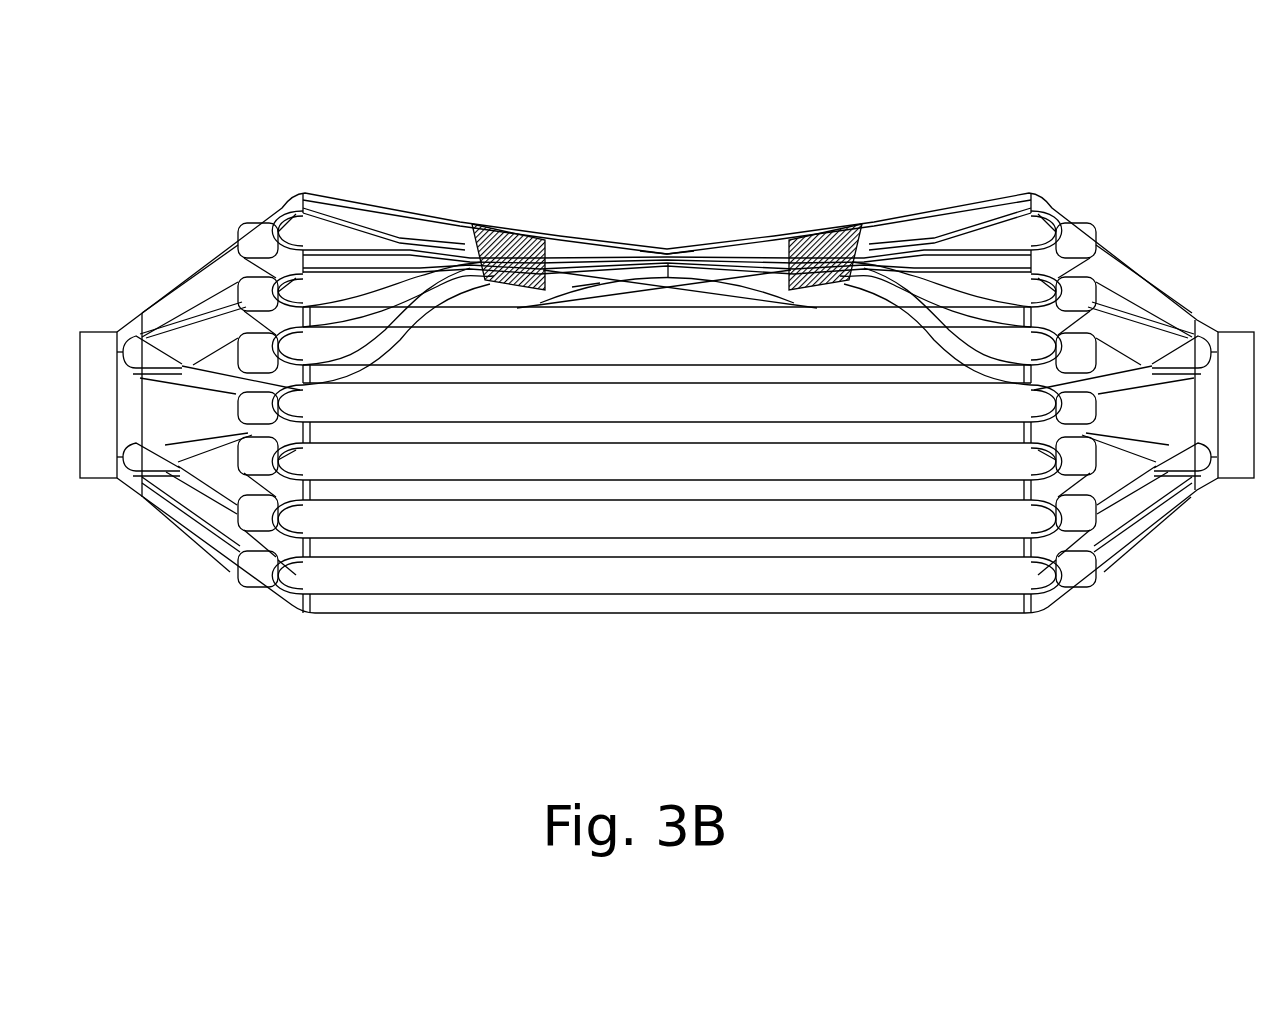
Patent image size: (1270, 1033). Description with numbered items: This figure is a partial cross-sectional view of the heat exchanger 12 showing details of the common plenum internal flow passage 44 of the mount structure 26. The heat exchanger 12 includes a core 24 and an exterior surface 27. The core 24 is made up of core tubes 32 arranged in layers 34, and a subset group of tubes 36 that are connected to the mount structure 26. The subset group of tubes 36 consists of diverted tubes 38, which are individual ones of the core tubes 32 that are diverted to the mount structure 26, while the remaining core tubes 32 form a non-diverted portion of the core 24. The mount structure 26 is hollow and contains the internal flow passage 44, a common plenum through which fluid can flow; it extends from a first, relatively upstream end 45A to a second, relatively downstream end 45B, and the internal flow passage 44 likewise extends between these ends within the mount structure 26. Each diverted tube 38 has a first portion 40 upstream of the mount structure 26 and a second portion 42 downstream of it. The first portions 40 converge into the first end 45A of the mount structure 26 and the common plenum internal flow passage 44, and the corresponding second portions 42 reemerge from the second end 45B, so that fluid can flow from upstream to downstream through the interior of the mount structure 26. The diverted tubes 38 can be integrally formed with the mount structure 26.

The heat exchanger 12 is at (185, 135).
The core 24 is at (905, 630).
The mount structure 26 is at (737, 248).
The exterior surface 27 is at (572, 287).
The core tubes 32 is at (735, 545).
The layers 34 is at (318, 400).
The subset group of tubes 36 is at (320, 182).
The diverted tubes 38 is at (361, 208).
The first portions 40 is at (403, 263).
The second portions 42 is at (990, 195).
The internal flow passage 44 is at (573, 287).
The first end 45A is at (540, 297).
The second end 45B is at (797, 250).